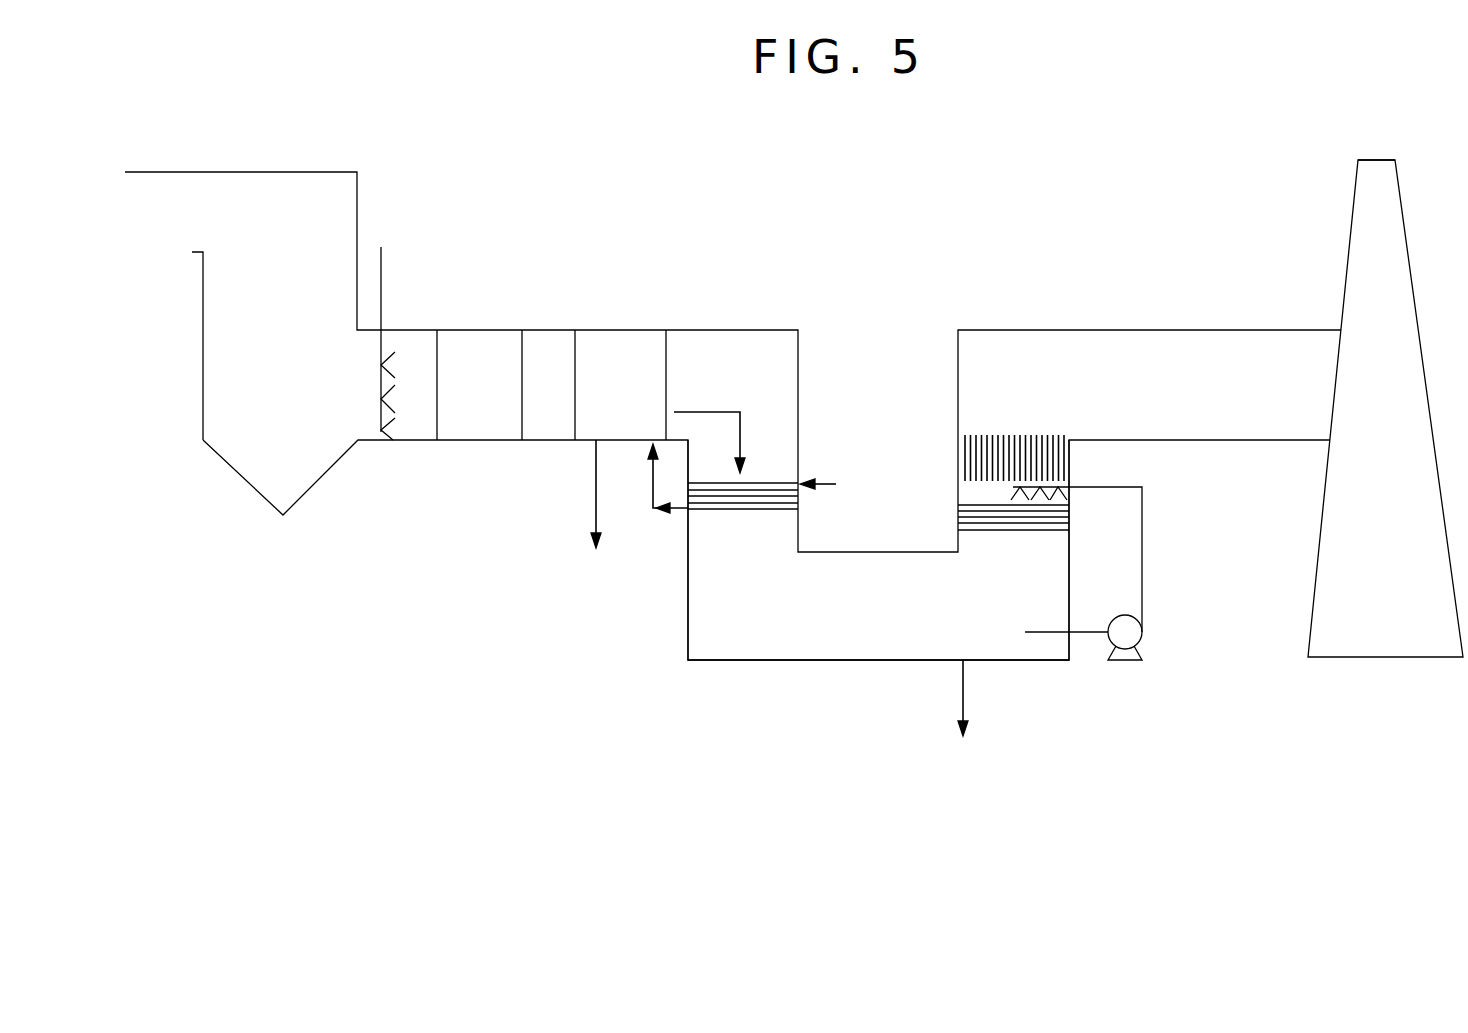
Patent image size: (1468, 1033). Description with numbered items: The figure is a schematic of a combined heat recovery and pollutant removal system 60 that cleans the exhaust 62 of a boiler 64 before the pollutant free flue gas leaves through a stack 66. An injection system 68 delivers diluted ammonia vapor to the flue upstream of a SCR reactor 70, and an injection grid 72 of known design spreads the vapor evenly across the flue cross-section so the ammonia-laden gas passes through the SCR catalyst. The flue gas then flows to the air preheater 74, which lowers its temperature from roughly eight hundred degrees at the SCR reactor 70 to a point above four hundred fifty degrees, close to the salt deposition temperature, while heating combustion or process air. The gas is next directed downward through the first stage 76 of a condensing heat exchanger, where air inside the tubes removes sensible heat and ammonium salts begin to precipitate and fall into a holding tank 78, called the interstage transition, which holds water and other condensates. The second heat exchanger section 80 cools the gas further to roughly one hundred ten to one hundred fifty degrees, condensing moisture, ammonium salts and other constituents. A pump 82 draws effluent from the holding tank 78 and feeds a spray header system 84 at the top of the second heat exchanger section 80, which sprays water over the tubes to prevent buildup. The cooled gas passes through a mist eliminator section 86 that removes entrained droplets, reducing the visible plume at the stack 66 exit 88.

The combined heat recovery and pollutant removal system 60 is at (1101, 234).
The exhaust 62 is at (312, 396).
The boiler 64 is at (203, 362).
The stack 66 is at (1401, 553).
The injection system 68 is at (391, 325).
The SCR reactor 70 is at (463, 336).
The injection grid 72 is at (434, 413).
The air preheater 74 is at (610, 336).
The first stage of condensing heat exchanger 76 is at (747, 512).
The holding tank 78 is at (896, 643).
The second heat exchanger section 80 is at (1018, 533).
The pump 82 is at (1137, 644).
The spray header system 84 is at (1107, 493).
The mist eliminator section 86 is at (1075, 418).
The stack exit 88 is at (1381, 158).